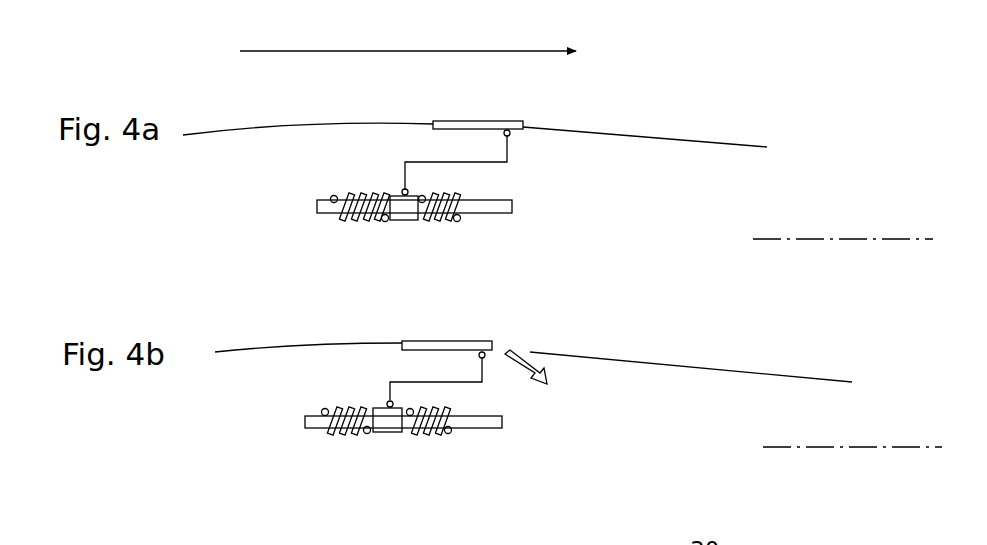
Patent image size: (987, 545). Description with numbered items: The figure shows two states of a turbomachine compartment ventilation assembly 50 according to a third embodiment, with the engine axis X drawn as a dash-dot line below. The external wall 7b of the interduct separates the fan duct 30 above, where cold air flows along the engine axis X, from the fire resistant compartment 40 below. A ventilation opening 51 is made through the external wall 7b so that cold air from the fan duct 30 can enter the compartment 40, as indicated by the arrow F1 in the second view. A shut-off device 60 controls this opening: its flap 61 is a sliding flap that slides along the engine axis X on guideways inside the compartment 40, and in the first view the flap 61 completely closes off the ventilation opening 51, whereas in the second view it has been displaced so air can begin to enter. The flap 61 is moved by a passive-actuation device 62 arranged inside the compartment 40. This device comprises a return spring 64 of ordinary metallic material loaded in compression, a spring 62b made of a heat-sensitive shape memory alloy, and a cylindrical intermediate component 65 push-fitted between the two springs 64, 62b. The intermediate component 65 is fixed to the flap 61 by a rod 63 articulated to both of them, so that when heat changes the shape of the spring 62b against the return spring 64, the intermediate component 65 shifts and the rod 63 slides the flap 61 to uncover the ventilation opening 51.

In FIG. 4A, the fan duct 30 is at (614, 97).
In FIG. 4B, the fan duct 30 is at (665, 329).
In FIG. 4A, the compartment 40 is at (689, 197).
In FIG. 4B, the compartment 40 is at (640, 428).
In FIG. 4A, the ventilation assembly 50 is at (341, 103).
In FIG. 4B, the ventilation assembly 50 is at (311, 324).
In FIG. 4A, the ventilation opening 51 is at (455, 117).
In FIG. 4B, the ventilation opening 51 is at (500, 350).
In FIG. 4A, the shut-off device 60 is at (407, 183).
In FIG. 4B, the shut-off device 60 is at (371, 422).
In FIG. 4A, the sliding flap 61 is at (445, 130).
In FIG. 4B, the sliding flap 61 is at (405, 352).
In FIG. 4A, the passive-actuation device 62 is at (416, 249).
In FIG. 4B, the passive-actuation device 62 is at (403, 473).
In FIG. 4A, the shape memory alloy spring 62b is at (425, 235).
In FIG. 4B, the shape memory alloy spring 62b is at (423, 430).
In FIG. 4A, the rod 63 is at (493, 162).
In FIG. 4B, the rod 63 is at (477, 382).
In FIG. 4A, the return spring 64 is at (343, 222).
In FIG. 4B, the return spring 64 is at (333, 430).
In FIG. 4A, the intermediate component 65 is at (395, 216).
In FIG. 4B, the intermediate component 65 is at (390, 432).
In FIG. 4A, the external wall of the interduct 7b is at (730, 143).
In FIG. 4B, the external wall of the interduct 7b is at (797, 373).
In FIG. 4A, the engine axis X is at (913, 240).
In FIG. 4B, the engine axis X is at (922, 447).
In FIG. 4B, the cold air entry arrow F1 is at (530, 352).